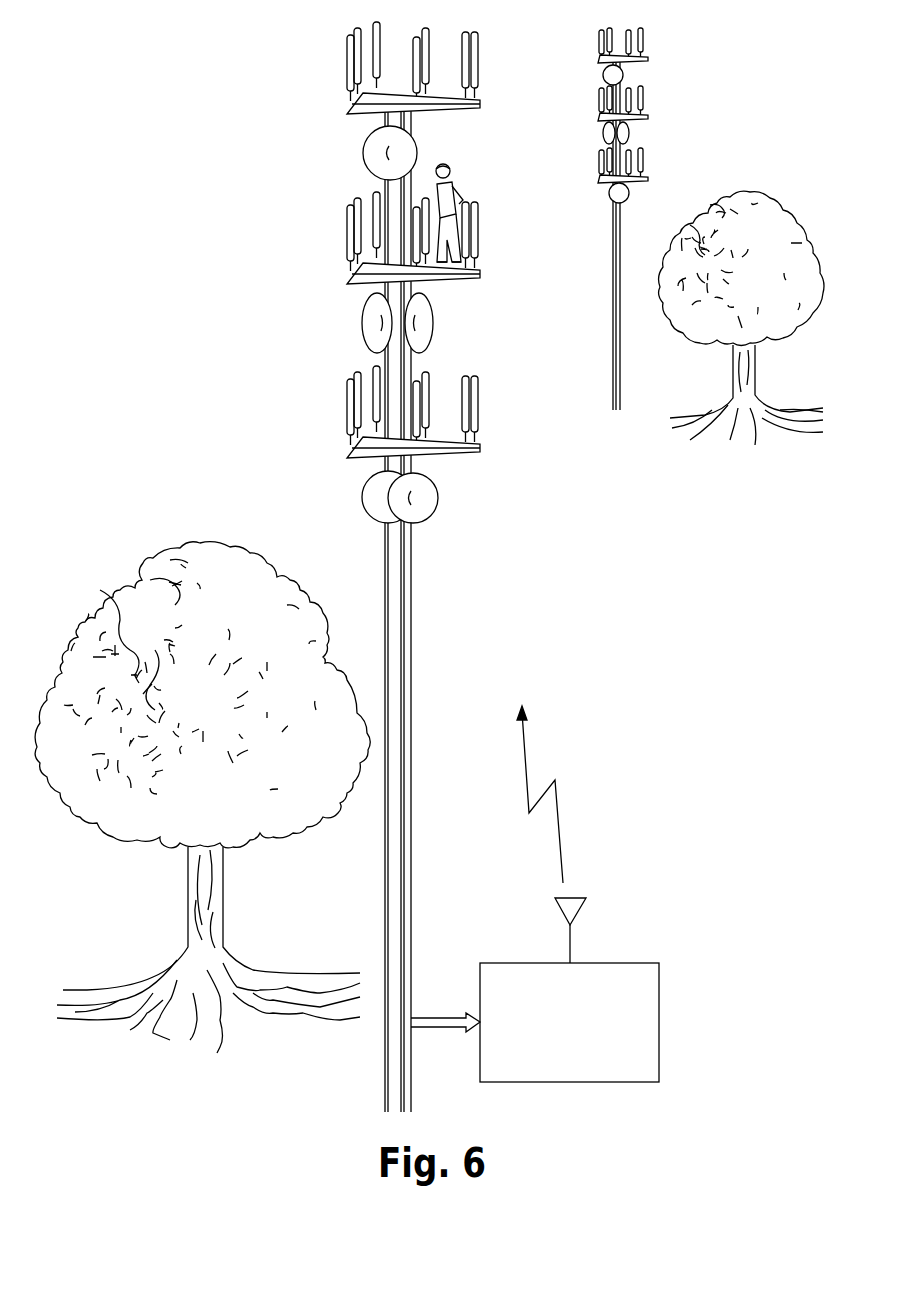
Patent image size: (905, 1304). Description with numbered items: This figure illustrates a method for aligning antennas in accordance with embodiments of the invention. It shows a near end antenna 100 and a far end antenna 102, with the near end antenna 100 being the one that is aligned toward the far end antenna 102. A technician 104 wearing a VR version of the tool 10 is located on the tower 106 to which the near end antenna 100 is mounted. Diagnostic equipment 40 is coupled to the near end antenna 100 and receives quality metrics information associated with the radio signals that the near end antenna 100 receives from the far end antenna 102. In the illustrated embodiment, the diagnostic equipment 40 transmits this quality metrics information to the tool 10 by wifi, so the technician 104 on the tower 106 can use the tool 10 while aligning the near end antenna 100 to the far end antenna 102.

The tool 10 is at (453, 173).
The diagnostic equipment 40 is at (661, 1008).
The near end antenna 100 is at (480, 228).
The far end antenna 102 is at (598, 156).
The technician 104 is at (450, 285).
The tower 106 is at (385, 578).